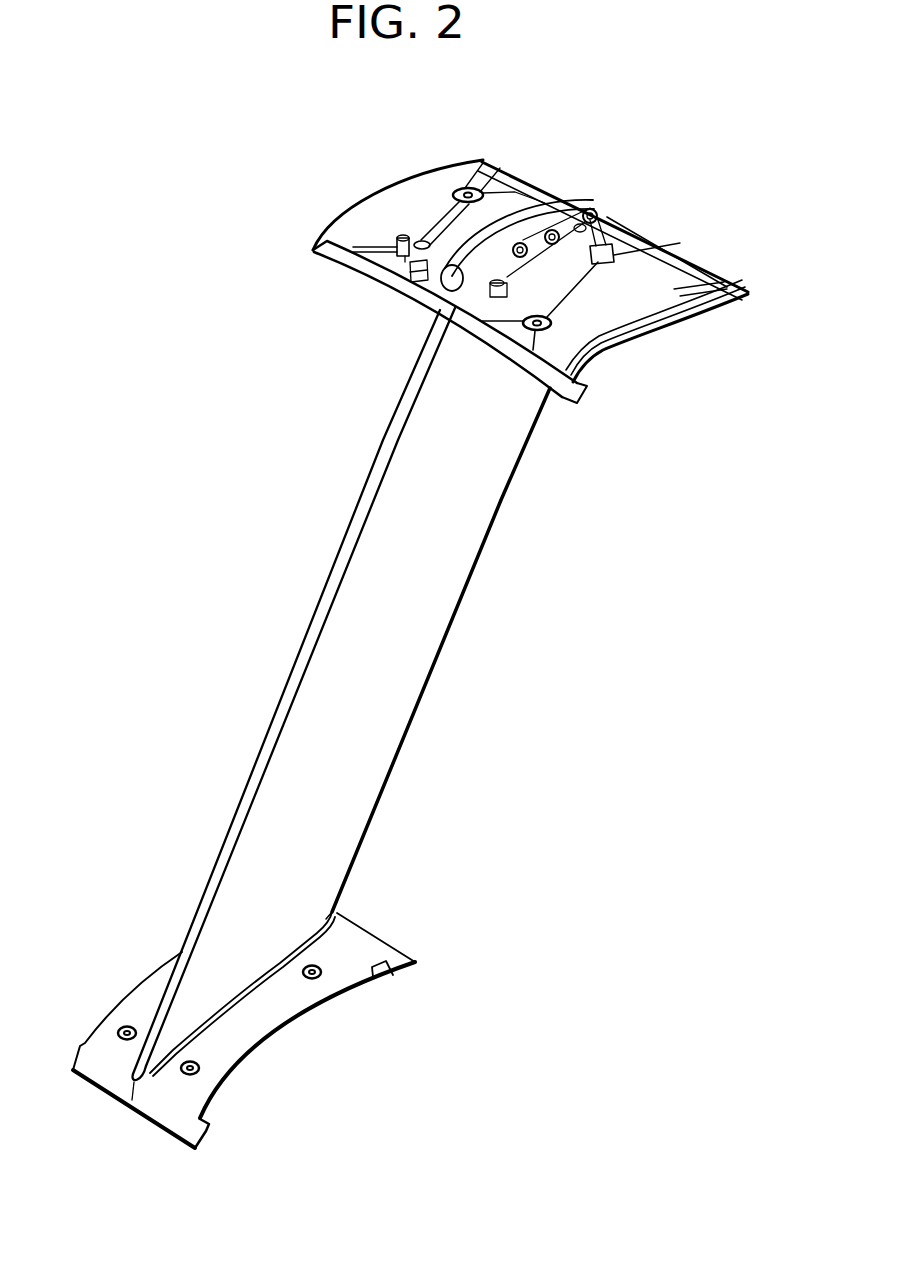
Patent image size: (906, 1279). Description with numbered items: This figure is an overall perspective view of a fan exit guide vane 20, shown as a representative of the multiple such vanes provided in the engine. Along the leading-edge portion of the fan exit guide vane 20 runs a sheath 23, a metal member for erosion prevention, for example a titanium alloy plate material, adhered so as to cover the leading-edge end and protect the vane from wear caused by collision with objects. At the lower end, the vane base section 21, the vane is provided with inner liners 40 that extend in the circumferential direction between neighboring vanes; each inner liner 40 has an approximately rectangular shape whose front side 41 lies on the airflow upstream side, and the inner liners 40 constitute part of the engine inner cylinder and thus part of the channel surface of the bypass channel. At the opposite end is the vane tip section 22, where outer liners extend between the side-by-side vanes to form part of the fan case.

The fan exit guide vane 20 is at (457, 611).
The vane base section 21 is at (307, 947).
The vane tip section 22 is at (492, 227).
The sheath 23 is at (343, 557).
The inner liner 40 is at (150, 987).
The front side 41 is at (373, 282).